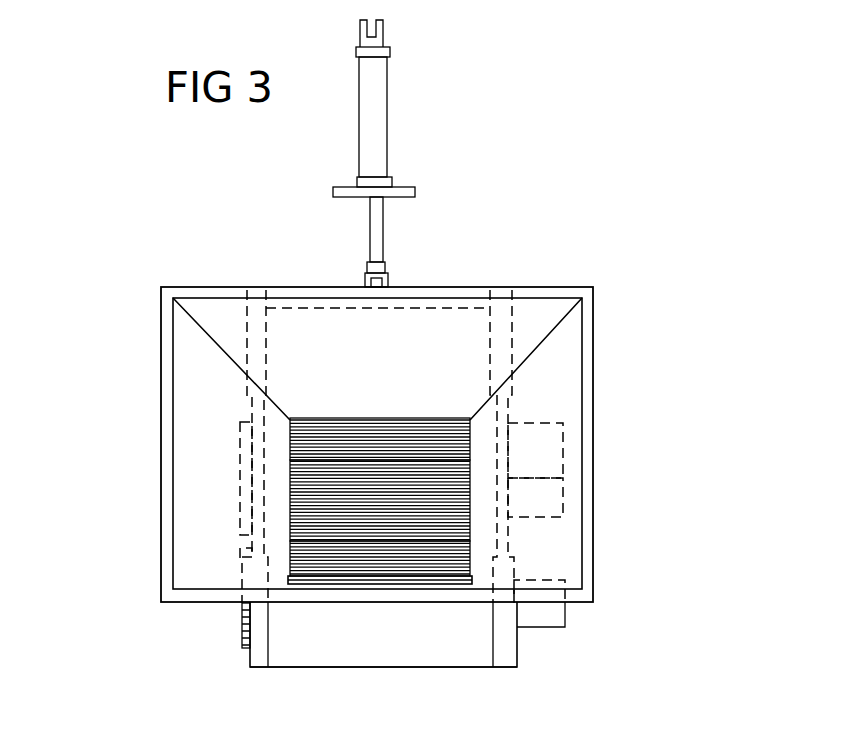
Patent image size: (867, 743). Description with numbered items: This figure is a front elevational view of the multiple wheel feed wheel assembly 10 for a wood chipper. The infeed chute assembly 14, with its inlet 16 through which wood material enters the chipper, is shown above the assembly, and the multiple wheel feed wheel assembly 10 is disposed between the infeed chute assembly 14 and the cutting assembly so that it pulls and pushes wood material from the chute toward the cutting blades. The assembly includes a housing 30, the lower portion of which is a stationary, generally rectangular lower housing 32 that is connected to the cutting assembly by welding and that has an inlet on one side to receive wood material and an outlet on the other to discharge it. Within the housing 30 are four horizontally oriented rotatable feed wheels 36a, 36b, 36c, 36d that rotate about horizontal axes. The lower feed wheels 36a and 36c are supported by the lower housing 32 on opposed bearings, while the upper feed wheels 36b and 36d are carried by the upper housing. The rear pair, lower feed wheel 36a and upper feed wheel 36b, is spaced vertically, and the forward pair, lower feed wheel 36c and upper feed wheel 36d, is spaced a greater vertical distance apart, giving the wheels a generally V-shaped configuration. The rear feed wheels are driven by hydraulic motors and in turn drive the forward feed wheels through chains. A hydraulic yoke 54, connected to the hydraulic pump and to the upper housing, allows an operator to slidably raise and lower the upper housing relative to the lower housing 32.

The multiple wheel feed wheel assembly 10 is at (474, 184).
The infeed chute assembly 14 is at (593, 358).
The inlet 16 is at (433, 367).
The housing 30 is at (485, 675).
The lower housing 32 is at (294, 650).
The lower feed wheel 36a is at (297, 558).
The upper feed wheel 36b is at (297, 511).
The lower feed wheel 36c is at (303, 576).
The upper feed wheel 36d is at (313, 442).
The hydraulic yoke 54 is at (374, 262).